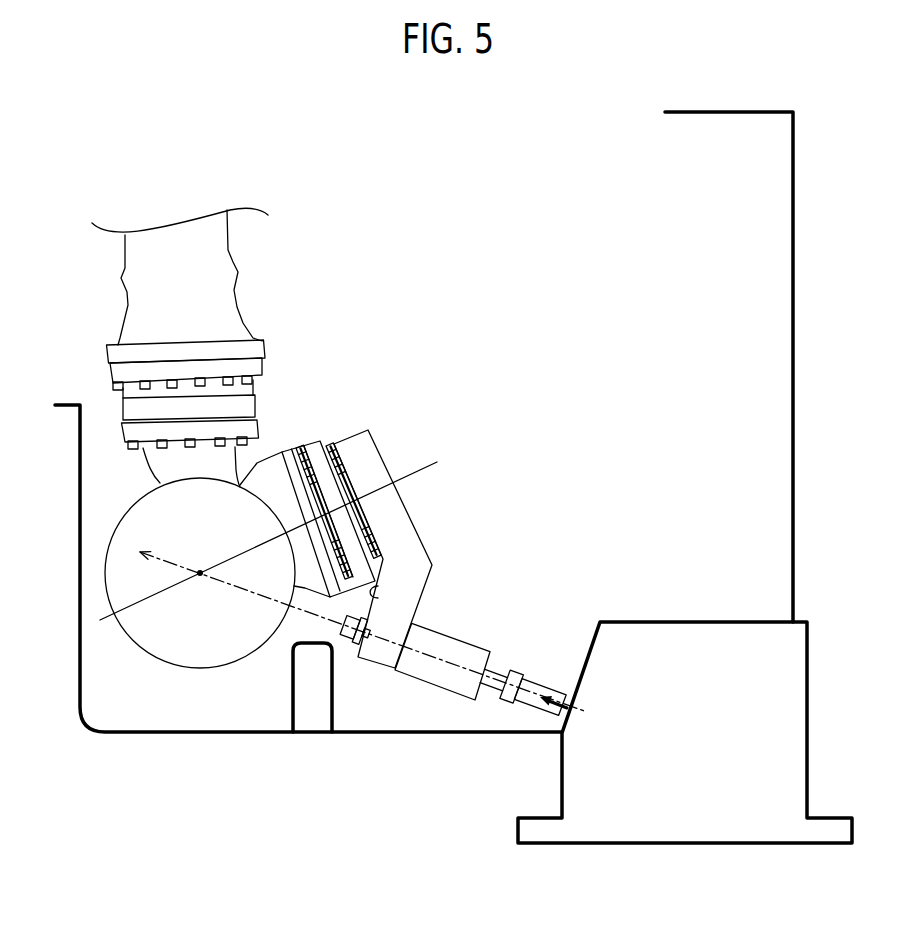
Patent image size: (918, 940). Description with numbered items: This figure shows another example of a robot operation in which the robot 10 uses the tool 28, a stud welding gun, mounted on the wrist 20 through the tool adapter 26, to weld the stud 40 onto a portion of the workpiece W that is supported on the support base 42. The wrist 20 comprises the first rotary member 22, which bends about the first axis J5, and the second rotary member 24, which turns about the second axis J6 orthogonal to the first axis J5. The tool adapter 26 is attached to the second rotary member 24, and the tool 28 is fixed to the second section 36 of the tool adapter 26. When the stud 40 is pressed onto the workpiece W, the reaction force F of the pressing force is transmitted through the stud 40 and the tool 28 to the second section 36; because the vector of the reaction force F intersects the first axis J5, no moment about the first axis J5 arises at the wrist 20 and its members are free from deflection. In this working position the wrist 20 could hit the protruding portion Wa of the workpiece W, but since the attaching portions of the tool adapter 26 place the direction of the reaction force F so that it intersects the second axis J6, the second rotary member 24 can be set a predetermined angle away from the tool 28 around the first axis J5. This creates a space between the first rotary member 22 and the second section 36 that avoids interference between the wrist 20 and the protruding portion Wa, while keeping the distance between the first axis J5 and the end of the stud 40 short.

The robot 10 is at (271, 248).
The wrist 20 is at (311, 427).
The first rotary member 22 is at (240, 483).
The second rotary member 24 is at (331, 440).
The tool adapter 26 is at (419, 518).
The tool 28 is at (460, 638).
The second section 36 is at (379, 592).
The stud 40 is at (536, 680).
The support base 42 is at (775, 735).
The first axis line J5 is at (200, 573).
The second axis line J6 is at (417, 460).
The reaction force F is at (554, 686).
The workpiece W is at (177, 734).
The protruding portion Wa is at (292, 678).